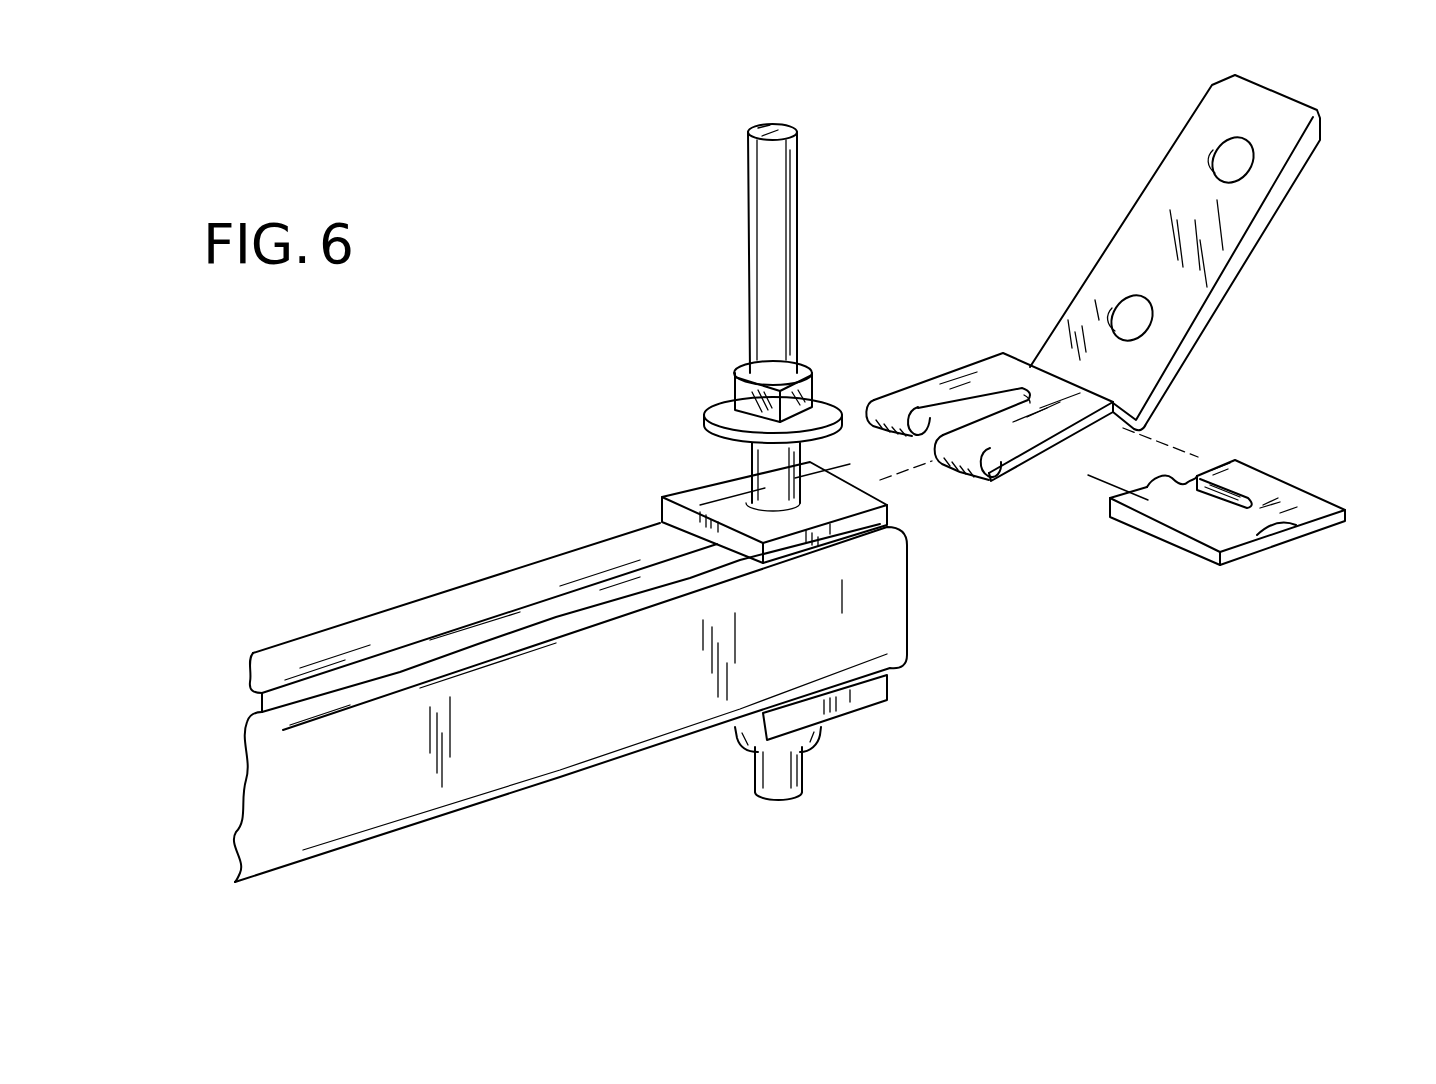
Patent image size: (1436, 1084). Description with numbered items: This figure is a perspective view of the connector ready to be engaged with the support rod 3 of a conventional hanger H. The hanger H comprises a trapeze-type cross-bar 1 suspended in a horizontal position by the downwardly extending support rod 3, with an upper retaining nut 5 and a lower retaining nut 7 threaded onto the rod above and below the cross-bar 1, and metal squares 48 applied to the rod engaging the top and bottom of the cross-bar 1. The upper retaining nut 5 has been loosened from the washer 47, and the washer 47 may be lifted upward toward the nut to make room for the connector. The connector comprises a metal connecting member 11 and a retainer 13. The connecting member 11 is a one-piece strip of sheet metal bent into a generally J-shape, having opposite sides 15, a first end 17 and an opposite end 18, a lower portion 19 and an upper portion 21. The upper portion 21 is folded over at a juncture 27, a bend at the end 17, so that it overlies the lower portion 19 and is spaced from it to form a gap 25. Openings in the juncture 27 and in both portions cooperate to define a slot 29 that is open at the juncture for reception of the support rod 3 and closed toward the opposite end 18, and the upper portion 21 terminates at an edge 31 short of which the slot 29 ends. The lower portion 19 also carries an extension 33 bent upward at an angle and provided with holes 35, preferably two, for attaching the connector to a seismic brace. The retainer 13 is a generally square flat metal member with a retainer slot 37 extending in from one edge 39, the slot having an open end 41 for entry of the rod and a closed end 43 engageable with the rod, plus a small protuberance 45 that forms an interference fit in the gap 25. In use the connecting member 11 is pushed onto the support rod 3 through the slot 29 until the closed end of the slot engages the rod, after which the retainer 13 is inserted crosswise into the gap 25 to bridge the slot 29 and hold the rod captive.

The cross-bar 1 is at (497, 771).
The support rod 3 is at (768, 240).
The upper retaining nut 5 is at (807, 387).
The lower retaining nut 7 is at (817, 738).
The metal connecting member 11 is at (1226, 242).
The retainer 13 is at (1214, 505).
The opposite sides 15 is at (1145, 183).
The end 17 is at (963, 466).
The opposite end 18 is at (1278, 82).
The lower portion 19 is at (995, 425).
The upper portion 21 is at (980, 378).
The gap 25 is at (1058, 440).
The juncture 27 is at (910, 397).
The slot 29 is at (1003, 393).
The edge 31 is at (1117, 412).
The extension 33 is at (1183, 323).
The holes 35 is at (1238, 163).
The retainer slot 37 is at (1203, 505).
The edge 39 is at (1222, 460).
The open end 41 is at (1148, 500).
The closed end 43 is at (1222, 515).
The protuberance 45 is at (1280, 548).
The washer 47 is at (722, 410).
The metal squares 48 is at (693, 498).
The hanger H is at (490, 500).